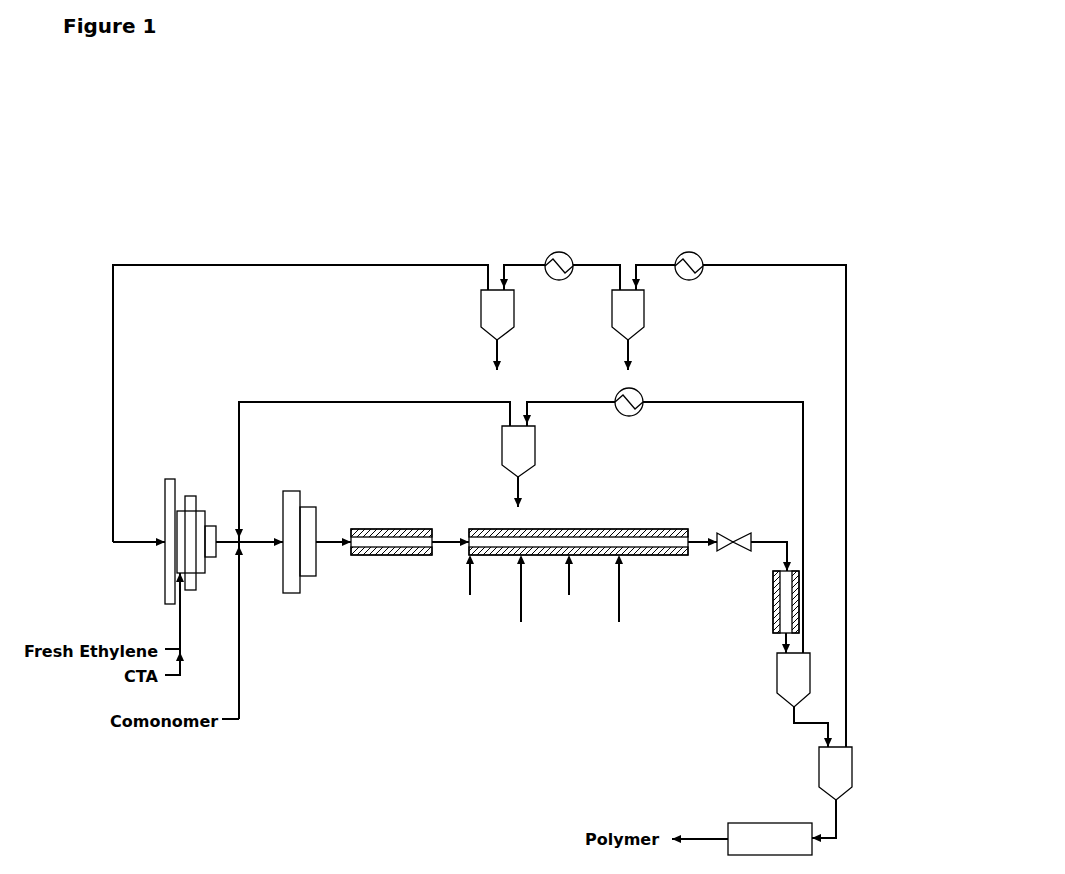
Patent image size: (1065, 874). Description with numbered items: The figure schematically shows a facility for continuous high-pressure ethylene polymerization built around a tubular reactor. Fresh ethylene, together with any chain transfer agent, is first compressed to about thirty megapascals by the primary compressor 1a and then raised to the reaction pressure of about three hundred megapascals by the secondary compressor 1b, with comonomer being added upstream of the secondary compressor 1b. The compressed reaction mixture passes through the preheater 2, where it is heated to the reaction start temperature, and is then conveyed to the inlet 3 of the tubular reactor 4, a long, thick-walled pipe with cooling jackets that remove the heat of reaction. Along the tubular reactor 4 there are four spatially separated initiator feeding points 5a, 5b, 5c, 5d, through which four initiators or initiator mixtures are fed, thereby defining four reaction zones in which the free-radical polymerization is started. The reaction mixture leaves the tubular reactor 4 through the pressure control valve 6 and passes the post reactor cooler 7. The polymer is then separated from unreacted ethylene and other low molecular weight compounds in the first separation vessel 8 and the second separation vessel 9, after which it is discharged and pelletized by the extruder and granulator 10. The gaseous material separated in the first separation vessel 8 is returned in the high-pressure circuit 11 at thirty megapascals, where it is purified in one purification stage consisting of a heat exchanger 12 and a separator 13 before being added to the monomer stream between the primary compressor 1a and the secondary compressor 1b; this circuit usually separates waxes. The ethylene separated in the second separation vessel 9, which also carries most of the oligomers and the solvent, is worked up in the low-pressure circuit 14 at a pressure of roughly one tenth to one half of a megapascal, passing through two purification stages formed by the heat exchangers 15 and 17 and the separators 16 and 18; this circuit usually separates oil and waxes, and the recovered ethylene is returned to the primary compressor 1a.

The primary compressor 1a is at (181, 496).
The secondary compressor 1b is at (308, 497).
The preheater 2 is at (388, 528).
The inlet 3 is at (467, 545).
The tubular reactor 4 is at (668, 528).
The initiator feeding point 5a is at (471, 557).
The initiator feeding point 5b is at (522, 557).
The initiator feeding point 5c is at (571, 557).
The initiator feeding point 5d is at (620, 557).
The pressure control valve 6 is at (734, 530).
The post reactor cooler 7 is at (772, 592).
The first separation vessel 8 is at (790, 678).
The second separation vessel 9 is at (840, 773).
The extruder and granulator 10 is at (766, 835).
The high-pressure circuit 11 is at (580, 404).
The heat exchanger 12 is at (627, 416).
The separator 13 is at (516, 446).
The low-pressure circuit 14 is at (653, 263).
The heat exchanger 15 is at (690, 252).
The separator 16 is at (636, 316).
The heat exchanger 17 is at (558, 252).
The separator 18 is at (506, 313).